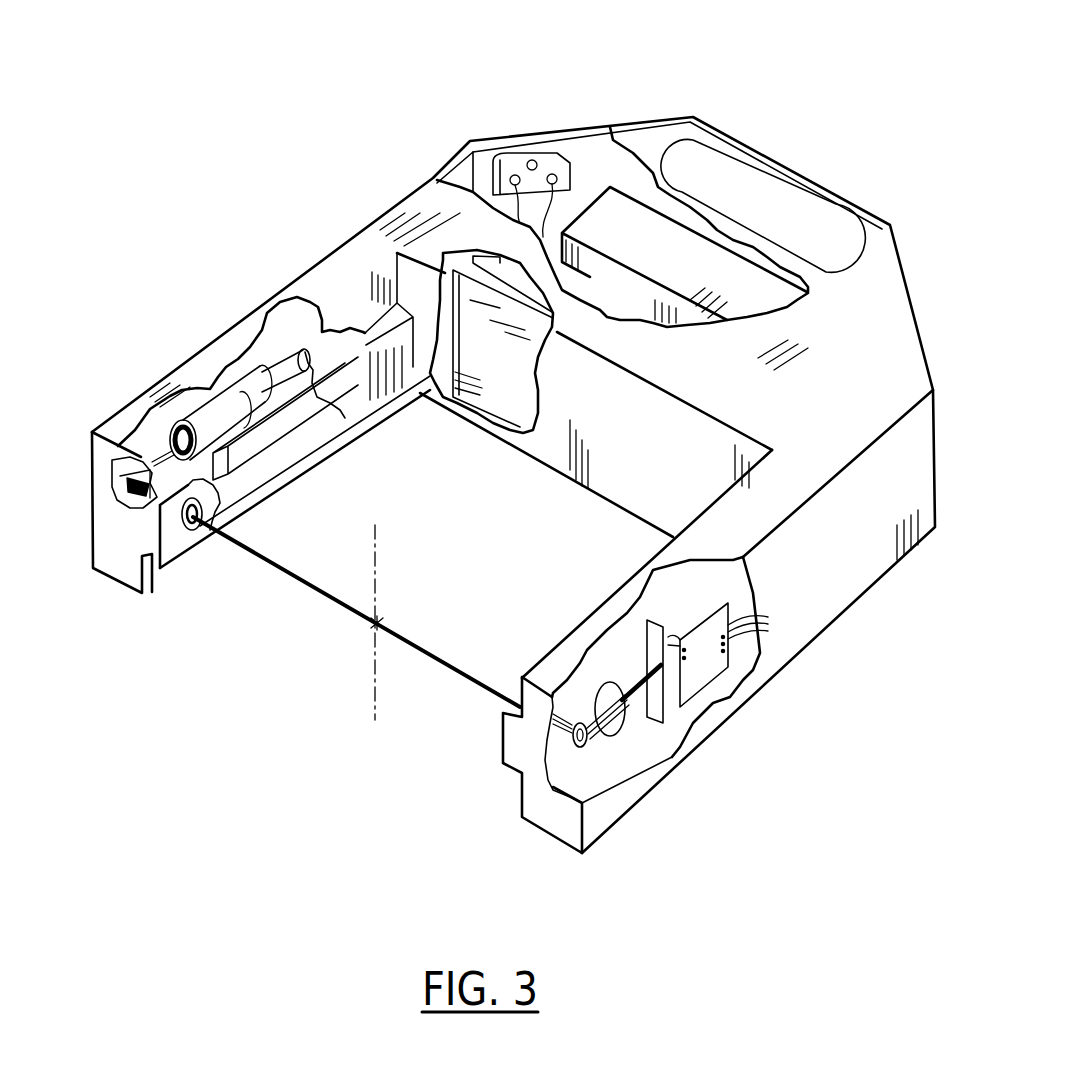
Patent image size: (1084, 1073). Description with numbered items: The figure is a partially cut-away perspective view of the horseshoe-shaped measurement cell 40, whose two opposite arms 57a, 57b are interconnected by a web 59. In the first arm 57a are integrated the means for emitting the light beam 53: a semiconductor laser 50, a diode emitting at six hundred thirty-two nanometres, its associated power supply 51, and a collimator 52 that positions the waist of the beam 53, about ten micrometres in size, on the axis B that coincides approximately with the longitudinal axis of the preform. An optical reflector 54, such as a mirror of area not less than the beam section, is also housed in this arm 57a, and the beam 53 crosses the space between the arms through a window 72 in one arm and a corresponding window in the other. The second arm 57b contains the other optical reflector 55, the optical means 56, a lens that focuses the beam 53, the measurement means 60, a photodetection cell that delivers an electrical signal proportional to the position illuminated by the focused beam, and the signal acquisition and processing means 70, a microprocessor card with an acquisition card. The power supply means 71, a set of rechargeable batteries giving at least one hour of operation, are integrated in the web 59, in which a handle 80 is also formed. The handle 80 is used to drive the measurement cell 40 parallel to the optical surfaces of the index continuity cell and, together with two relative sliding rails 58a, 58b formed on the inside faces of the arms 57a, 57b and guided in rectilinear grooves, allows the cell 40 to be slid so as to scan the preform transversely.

The measurement cell 40 is at (898, 213).
The semiconductor laser 50 is at (228, 392).
The power supply 51 is at (281, 405).
The collimator 52 is at (176, 413).
The light beam 53 is at (150, 441).
The optical reflector means 54 is at (115, 502).
The optical reflector means 55 is at (553, 800).
The optical means 56 is at (612, 744).
The arm 57a is at (340, 265).
The arm 57b is at (828, 568).
The sliding rail 58a is at (153, 583).
The sliding rail 58b is at (510, 737).
The web 59 is at (590, 163).
The measurement means 60 is at (665, 730).
The signal acquisition and processing means 70 is at (700, 693).
The power supply means 71 is at (668, 252).
The window 72 is at (188, 532).
The handle 80 is at (801, 194).